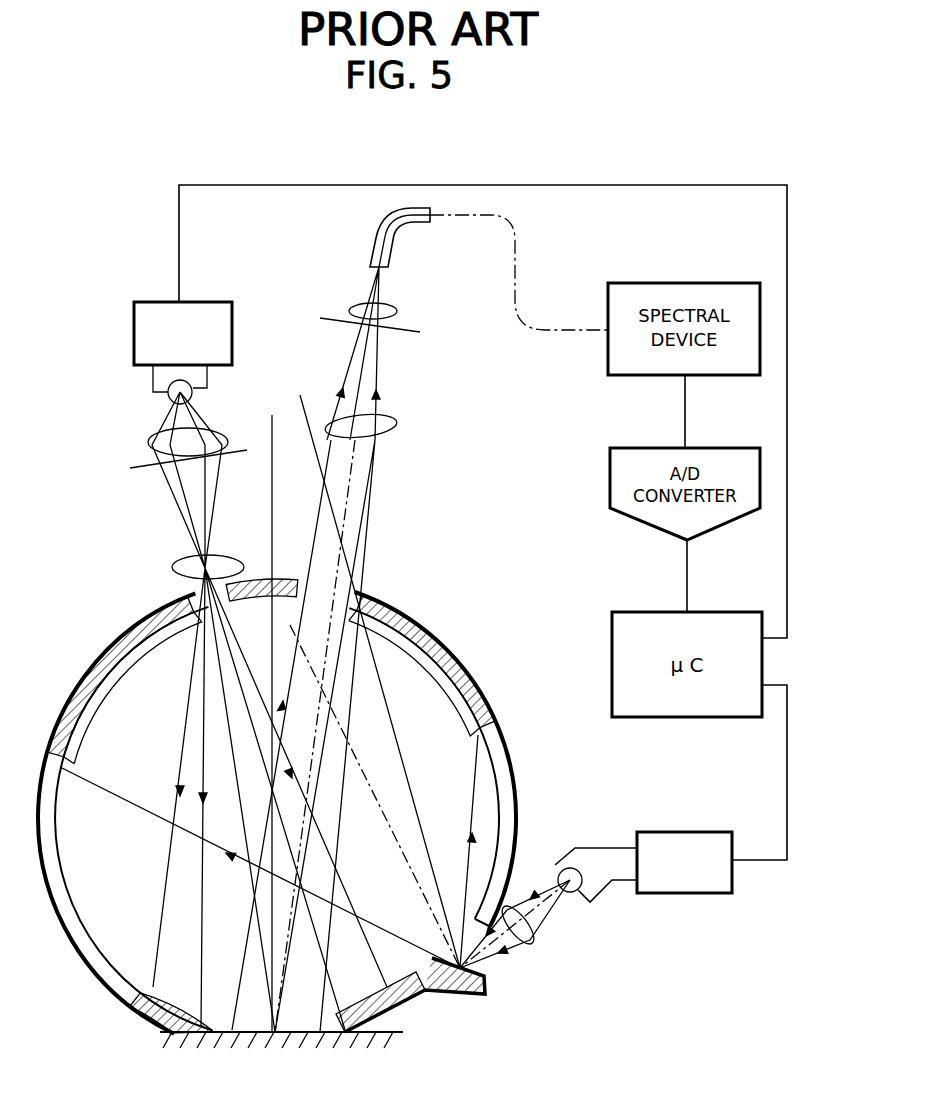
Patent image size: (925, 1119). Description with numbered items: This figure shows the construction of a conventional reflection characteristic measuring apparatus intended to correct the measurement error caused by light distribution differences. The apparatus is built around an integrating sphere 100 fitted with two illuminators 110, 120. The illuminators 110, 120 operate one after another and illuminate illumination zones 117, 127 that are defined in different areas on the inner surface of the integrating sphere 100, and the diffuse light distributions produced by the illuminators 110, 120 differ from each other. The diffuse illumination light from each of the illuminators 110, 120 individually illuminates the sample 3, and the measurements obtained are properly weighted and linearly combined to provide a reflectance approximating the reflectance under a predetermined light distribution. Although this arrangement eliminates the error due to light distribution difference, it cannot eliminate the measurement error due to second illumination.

The sample 3 is at (168, 1043).
The integrating sphere 100 is at (510, 768).
The illuminator 110 is at (88, 405).
The illumination zone 117 is at (202, 1012).
The illuminator 120 is at (647, 938).
The illumination zone 127 is at (150, 648).